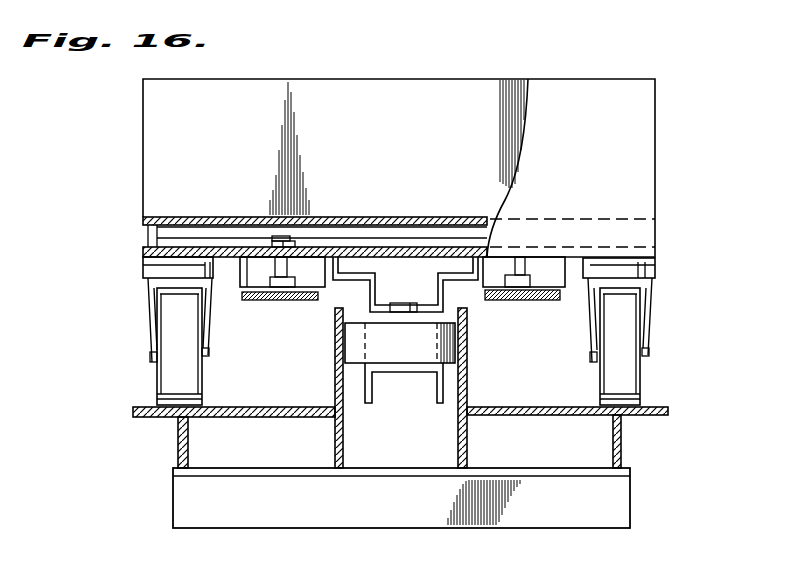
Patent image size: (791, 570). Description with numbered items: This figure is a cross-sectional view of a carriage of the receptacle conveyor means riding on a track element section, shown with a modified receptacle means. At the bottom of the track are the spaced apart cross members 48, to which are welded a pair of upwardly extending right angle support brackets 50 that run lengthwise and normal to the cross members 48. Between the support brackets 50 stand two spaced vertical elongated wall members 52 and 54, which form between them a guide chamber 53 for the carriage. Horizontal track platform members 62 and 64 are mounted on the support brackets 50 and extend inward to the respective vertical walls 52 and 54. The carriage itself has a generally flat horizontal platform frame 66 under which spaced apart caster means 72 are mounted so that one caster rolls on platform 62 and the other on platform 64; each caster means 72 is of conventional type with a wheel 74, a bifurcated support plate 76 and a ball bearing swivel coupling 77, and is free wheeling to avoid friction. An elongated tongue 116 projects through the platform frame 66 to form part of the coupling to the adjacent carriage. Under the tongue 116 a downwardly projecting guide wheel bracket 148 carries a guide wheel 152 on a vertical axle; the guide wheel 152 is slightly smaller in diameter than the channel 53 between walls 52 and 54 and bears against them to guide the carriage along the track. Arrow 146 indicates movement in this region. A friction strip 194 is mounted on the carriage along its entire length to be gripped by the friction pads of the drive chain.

The cross members 48 is at (352, 512).
The right angle support brackets 50 is at (178, 448).
The vertical elongated wall member 52 is at (466, 384).
The guide chamber 53 is at (443, 442).
The vertical elongated wall member 54 is at (335, 380).
The horizontal track platform member 62 is at (665, 409).
The horizontal track platform member 64 is at (133, 412).
The platform frame 66 is at (183, 252).
The caster means 72 is at (157, 366).
The wheel 74 is at (185, 380).
The bifurcated support plate 76 is at (150, 315).
The ball bearing swivel coupling 77 is at (143, 266).
The tongue 116 is at (413, 253).
The direction arrow 146 is at (353, 291).
The guide wheel bracket 148 is at (466, 300).
The guide wheel 152 is at (400, 343).
The friction strip 194 is at (250, 300).